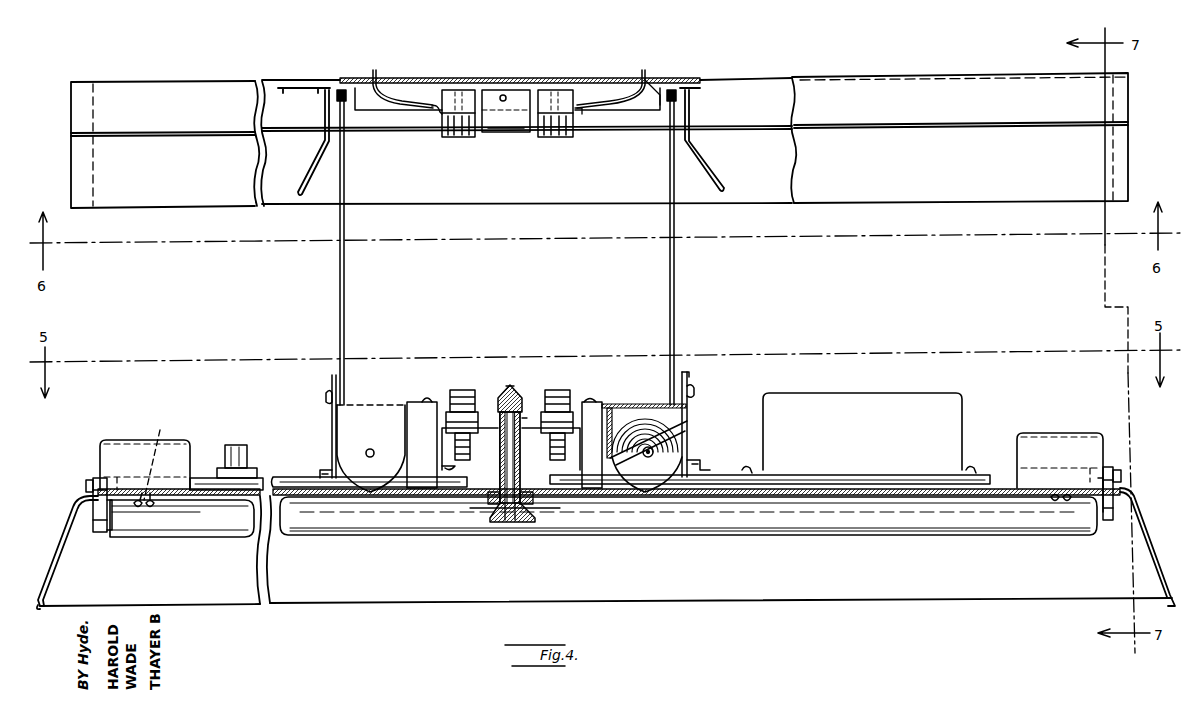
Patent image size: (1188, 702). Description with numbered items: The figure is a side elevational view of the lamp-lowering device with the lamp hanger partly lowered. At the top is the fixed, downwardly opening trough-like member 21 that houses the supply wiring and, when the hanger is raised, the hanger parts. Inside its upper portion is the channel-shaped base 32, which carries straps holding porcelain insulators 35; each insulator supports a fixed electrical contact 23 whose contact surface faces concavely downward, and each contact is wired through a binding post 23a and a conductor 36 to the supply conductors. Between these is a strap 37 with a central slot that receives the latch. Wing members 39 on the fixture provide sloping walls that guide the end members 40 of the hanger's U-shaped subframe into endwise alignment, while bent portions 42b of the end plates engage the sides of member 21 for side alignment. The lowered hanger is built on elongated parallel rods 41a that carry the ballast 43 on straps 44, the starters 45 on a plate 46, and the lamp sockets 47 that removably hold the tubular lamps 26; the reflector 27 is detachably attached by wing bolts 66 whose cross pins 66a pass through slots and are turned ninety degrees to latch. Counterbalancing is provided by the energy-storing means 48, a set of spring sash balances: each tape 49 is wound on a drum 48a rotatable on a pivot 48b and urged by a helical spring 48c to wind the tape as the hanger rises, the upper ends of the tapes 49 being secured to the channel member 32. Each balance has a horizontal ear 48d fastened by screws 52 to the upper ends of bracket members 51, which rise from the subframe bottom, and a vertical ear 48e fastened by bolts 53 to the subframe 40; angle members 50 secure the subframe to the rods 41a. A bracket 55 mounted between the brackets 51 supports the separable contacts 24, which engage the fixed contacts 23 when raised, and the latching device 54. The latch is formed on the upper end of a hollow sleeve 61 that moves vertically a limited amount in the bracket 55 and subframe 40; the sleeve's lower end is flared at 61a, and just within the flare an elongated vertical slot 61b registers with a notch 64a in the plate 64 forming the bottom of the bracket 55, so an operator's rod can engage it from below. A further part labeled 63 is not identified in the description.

The trough-like member 21 is at (930, 100).
The fixed electrical contacts 23 is at (465, 136).
The binding post 23a is at (438, 115).
The separable contacts 24 is at (462, 389).
The tubular lamps 26 is at (1032, 536).
The reflector 27 is at (1138, 503).
The channel-shaped base 32 is at (652, 92).
The insulator 35 is at (582, 112).
The conductor 36 is at (395, 105).
The strap 37 is at (518, 133).
The wing members 39 is at (313, 163).
The end members of subframe 40 is at (332, 383).
The rods 41a is at (285, 478).
The bent portions of plates 42b is at (123, 448).
The ballast unit 43 is at (862, 431).
The straps 44 is at (985, 460).
The starters 45 is at (238, 446).
The plate 46 is at (208, 477).
The lamp sockets 47 is at (95, 513).
The energy-storing means 48 is at (627, 380).
The drum 48a is at (680, 428).
The pivot 48b is at (655, 450).
The helical spring 48c is at (643, 430).
The horizontally extending ear 48d is at (609, 406).
The vertically extending ear 48e is at (685, 372).
The tapes 49 is at (346, 268).
The angle members 50 is at (322, 470).
The bracket members 51 is at (506, 445).
The screws 52 is at (428, 400).
The bolts 53 is at (325, 398).
The latching device 54 is at (510, 388).
The bracket 55 is at (490, 427).
The hollow sleeve 61 is at (521, 445).
The flared lower end 61a is at (533, 518).
The elongated vertical slot 61b is at (508, 522).
The collar 63 is at (523, 420).
The plate 64 is at (484, 491).
The notch 64a is at (550, 510).
The wing bolts 66 is at (150, 508).
The cross pin 66a is at (161, 454).